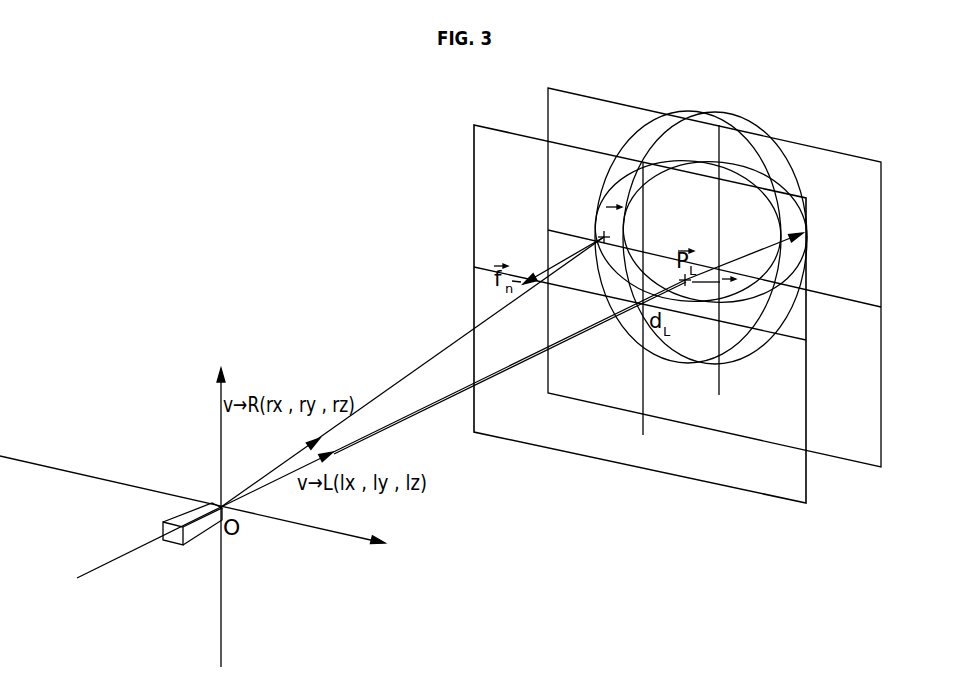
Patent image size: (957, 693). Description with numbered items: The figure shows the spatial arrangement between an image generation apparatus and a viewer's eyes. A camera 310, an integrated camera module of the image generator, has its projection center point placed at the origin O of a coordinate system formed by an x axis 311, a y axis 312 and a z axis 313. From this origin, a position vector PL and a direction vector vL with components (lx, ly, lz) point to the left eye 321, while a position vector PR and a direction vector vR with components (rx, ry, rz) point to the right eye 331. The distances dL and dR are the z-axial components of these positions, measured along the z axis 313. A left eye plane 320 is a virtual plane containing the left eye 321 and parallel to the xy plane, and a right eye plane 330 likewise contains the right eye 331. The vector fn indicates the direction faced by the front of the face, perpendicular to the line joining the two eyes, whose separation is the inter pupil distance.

The camera 310 is at (184, 518).
The x axis 311 is at (225, 509).
The y axis 312 is at (247, 504).
The z axis 313 is at (131, 557).
The left eye plane 320 is at (713, 485).
The left eye 321 is at (747, 295).
The right eye plane 330 is at (842, 462).
The right eye 331 is at (600, 235).